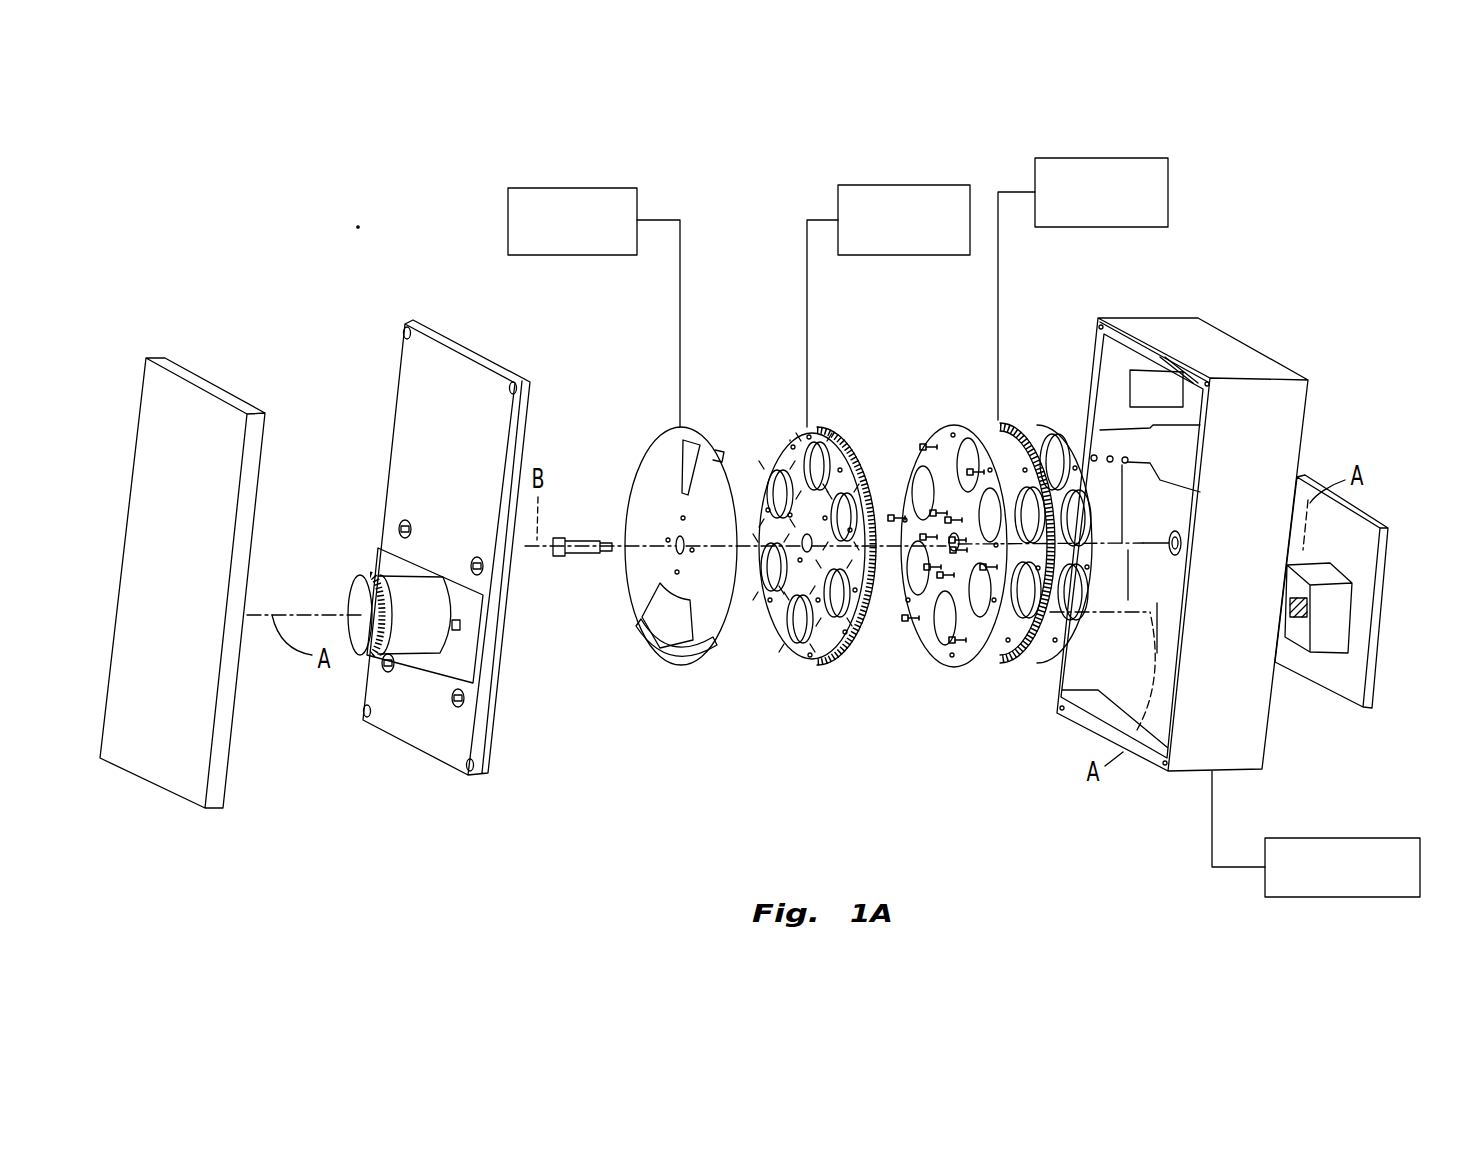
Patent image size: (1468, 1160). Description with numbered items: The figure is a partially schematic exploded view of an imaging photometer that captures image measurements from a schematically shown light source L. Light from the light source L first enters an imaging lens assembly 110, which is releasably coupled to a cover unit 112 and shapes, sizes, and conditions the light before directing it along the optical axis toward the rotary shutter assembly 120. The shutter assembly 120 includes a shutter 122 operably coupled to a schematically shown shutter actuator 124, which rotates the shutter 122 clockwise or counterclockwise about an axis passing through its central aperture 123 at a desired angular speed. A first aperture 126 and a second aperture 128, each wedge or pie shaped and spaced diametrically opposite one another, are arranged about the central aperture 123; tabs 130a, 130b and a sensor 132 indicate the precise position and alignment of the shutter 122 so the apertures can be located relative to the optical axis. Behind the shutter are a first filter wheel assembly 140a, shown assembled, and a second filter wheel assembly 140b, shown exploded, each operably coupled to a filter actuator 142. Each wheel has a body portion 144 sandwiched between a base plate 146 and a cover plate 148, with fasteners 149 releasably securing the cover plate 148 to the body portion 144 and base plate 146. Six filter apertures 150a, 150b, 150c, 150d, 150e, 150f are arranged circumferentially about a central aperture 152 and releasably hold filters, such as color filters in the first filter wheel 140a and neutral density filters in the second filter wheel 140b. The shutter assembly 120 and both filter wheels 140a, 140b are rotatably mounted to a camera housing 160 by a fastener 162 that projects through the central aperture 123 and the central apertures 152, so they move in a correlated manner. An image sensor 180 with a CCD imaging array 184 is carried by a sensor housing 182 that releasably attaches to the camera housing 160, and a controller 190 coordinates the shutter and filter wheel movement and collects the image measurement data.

The light source L is at (206, 382).
The imaging lens assembly 110 is at (367, 570).
The cover unit 112 is at (452, 360).
The rotary shutter assembly 120 is at (662, 518).
The shutter 122 is at (735, 445).
The central aperture 123 is at (675, 540).
The shutter actuator 124 is at (570, 188).
The first aperture 126 is at (710, 640).
The second aperture 128 is at (670, 430).
The tab 130a is at (640, 640).
The tab 130b is at (712, 440).
The sensor 132 is at (1123, 350).
The first filter wheel assembly 140a is at (850, 356).
The second filter wheel assembly 140b is at (955, 480).
The filter actuator 142 is at (906, 185).
The body portion 144 is at (820, 430).
The base plate 146 is at (790, 440).
The cover plate 148 is at (937, 435).
The fasteners 149 is at (900, 520).
The filter aperture 150a is at (798, 645).
The filter aperture 150b is at (838, 618).
The filter aperture 150c is at (913, 505).
The filter aperture 150d is at (830, 452).
The filter aperture 150e is at (775, 478).
The filter aperture 150f is at (775, 592).
The central aperture 152 is at (802, 546).
The camera housing 160 is at (1198, 567).
The fastener 162 is at (583, 535).
The image sensor 180 is at (1317, 583).
The sensor housing 182 is at (1338, 615).
The CCD imaging array 184 is at (1297, 620).
The controller 190 is at (1372, 838).